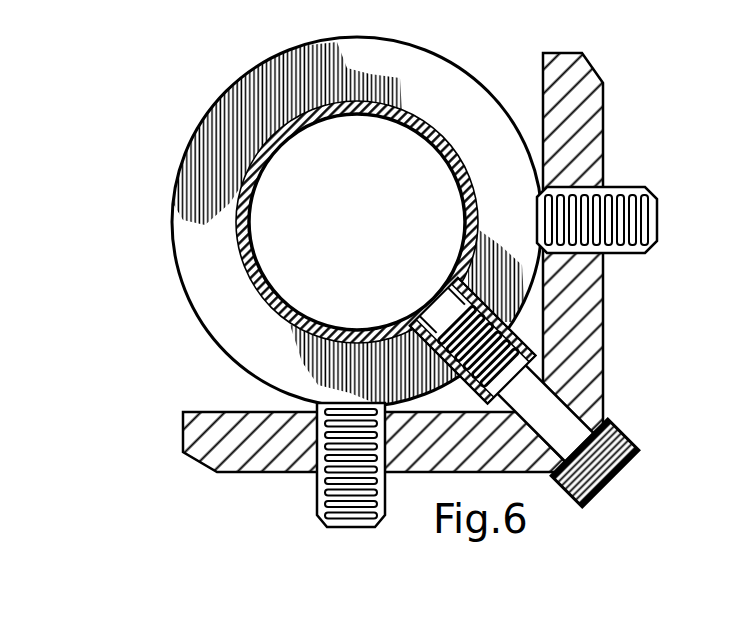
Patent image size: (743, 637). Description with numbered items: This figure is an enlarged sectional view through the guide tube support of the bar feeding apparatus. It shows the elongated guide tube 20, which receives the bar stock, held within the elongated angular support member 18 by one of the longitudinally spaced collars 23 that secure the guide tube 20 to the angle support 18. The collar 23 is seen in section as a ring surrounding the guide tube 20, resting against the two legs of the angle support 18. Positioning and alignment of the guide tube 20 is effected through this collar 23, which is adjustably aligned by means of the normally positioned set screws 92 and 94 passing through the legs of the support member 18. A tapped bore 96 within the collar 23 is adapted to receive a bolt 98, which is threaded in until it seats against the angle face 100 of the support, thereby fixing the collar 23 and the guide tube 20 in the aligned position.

The support member 18 is at (600, 106).
The guide tube 20 is at (233, 245).
The collar 23 is at (219, 91).
The set screw 92 is at (317, 497).
The set screw 94 is at (659, 216).
The tapped bore 96 is at (450, 321).
The bolt 98 is at (568, 418).
The angle face 100 is at (624, 440).